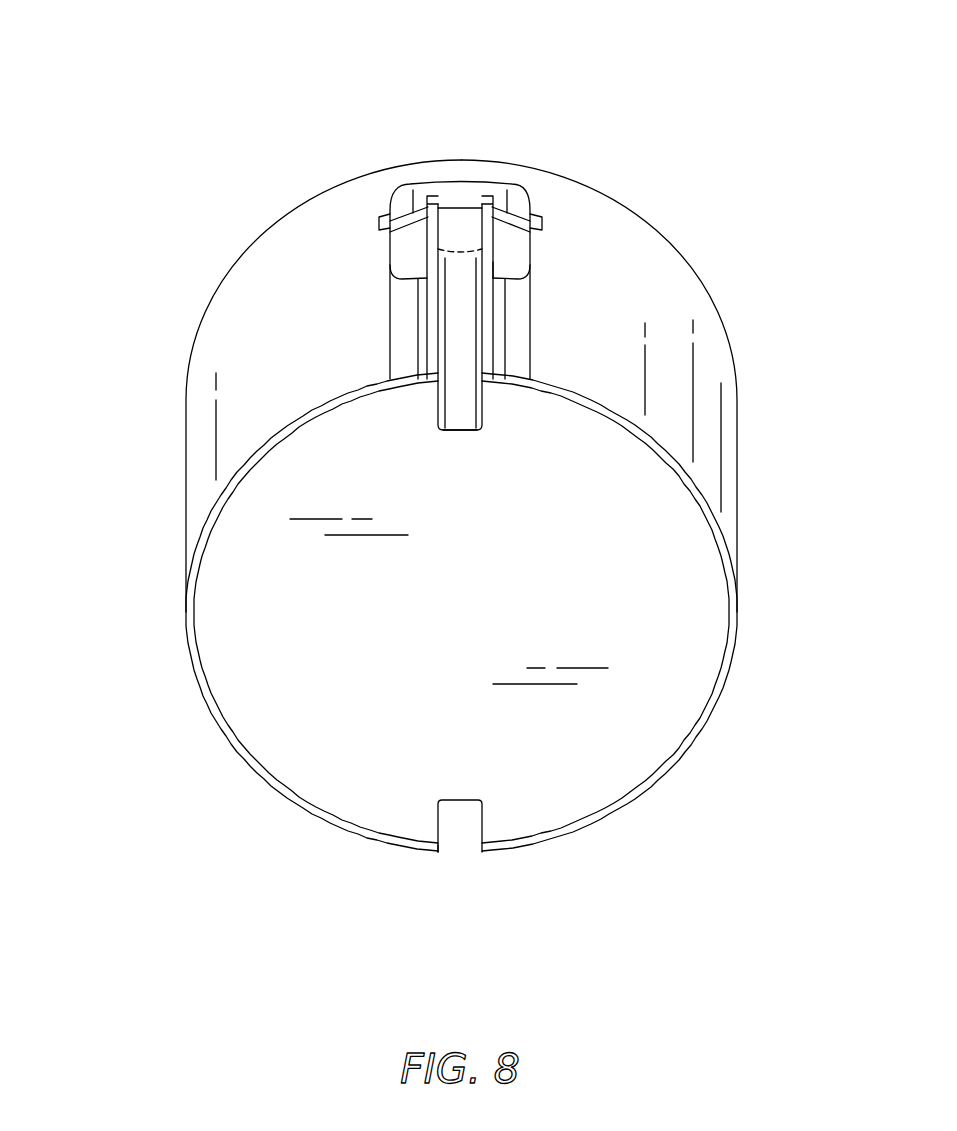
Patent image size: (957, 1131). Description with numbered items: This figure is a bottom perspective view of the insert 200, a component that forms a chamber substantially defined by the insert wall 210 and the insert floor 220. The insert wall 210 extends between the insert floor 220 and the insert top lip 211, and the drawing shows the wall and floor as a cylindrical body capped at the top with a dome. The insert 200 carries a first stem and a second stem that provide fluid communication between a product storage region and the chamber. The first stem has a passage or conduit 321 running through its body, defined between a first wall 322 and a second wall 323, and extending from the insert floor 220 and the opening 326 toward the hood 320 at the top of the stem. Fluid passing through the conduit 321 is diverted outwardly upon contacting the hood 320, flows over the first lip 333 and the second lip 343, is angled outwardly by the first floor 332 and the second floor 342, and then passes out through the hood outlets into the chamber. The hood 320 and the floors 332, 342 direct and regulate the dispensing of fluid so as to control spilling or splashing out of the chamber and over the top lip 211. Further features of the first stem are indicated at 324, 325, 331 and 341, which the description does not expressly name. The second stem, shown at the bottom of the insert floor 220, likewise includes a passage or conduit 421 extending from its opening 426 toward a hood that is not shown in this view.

The insert 200 is at (96, 87).
The insert wall 210 is at (317, 210).
The insert top lip 211 is at (685, 260).
The insert floor 220 is at (645, 680).
The hood 320 is at (455, 197).
The passage or conduit 321 is at (454, 357).
The first wall 322 is at (490, 264).
The second wall 323 is at (433, 299).
The right gap 324 is at (527, 326).
The left gap 325 is at (395, 341).
The opening 326 is at (497, 438).
The right tab 331 is at (522, 203).
The first floor 332 is at (522, 247).
The first lip 333 is at (493, 202).
The left tab 341 is at (403, 200).
The second floor 342 is at (403, 238).
The second lip 343 is at (432, 197).
The passage or conduit 421 is at (465, 833).
The opening 426 is at (433, 871).